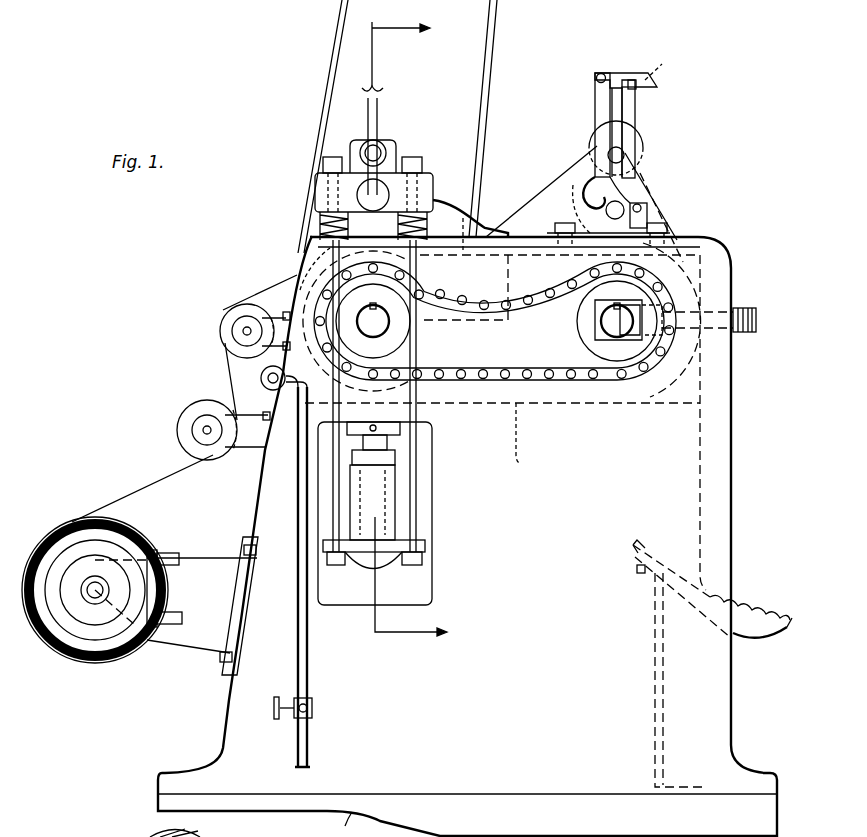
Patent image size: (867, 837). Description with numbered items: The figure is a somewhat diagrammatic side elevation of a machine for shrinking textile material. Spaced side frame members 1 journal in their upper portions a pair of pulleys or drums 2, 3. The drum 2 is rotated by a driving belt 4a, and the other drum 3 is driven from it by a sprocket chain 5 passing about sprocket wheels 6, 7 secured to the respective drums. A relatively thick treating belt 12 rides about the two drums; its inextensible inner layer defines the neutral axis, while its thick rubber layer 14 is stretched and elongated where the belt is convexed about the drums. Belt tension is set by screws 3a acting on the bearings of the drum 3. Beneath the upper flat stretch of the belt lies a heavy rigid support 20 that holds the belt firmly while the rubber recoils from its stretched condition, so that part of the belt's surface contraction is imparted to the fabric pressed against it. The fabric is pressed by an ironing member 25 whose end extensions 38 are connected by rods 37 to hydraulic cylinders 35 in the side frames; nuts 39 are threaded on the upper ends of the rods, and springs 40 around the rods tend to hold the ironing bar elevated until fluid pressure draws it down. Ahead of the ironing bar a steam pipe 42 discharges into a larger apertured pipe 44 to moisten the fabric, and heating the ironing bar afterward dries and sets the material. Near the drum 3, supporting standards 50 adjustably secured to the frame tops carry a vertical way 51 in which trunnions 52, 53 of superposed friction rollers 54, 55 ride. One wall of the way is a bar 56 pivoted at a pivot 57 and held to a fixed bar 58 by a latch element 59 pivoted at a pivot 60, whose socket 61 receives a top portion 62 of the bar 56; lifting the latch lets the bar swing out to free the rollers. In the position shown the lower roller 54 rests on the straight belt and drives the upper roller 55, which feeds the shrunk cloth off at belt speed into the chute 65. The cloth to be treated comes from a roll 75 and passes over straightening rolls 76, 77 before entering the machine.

The side frame members 1 is at (587, 758).
The pulley or drum 2 is at (420, 400).
The pulley or drum 3 is at (648, 420).
The screws 3a is at (752, 336).
The driving belt 4a is at (478, 130).
The sprocket chain 5 is at (567, 382).
The sprocket wheel 6 is at (333, 295).
The sprocket wheel 7 is at (645, 312).
The belt 12 is at (610, 595).
The rubber layer 14 is at (340, 824).
The support 20 is at (503, 416).
The ironing member 25 is at (478, 222).
The hydraulic cylinders 35 is at (396, 526).
The rods 37 is at (416, 470).
The extensions 38 is at (316, 190).
The nuts 39 is at (413, 157).
The springs 40 is at (424, 222).
The steam pipe 42 is at (340, 598).
The larger pipe 44 is at (274, 566).
The supporting standards 50 is at (612, 232).
The vertical way 51 is at (615, 122).
The trunnion 52 is at (630, 205).
The trunnion 53 is at (624, 155).
The friction roller 54 is at (590, 192).
The friction roller 55 is at (592, 142).
The bar 56 is at (630, 108).
The pivot 57 is at (650, 210).
The bar 58 is at (598, 100).
The latch element 59 is at (630, 73).
The pivot 60 is at (601, 73).
The socket 61 is at (645, 80).
The top portion 62 is at (640, 92).
The chute 65 is at (766, 643).
The roll 75 is at (112, 656).
The straightening roll 76 is at (178, 432).
The straightening roll 77 is at (222, 330).